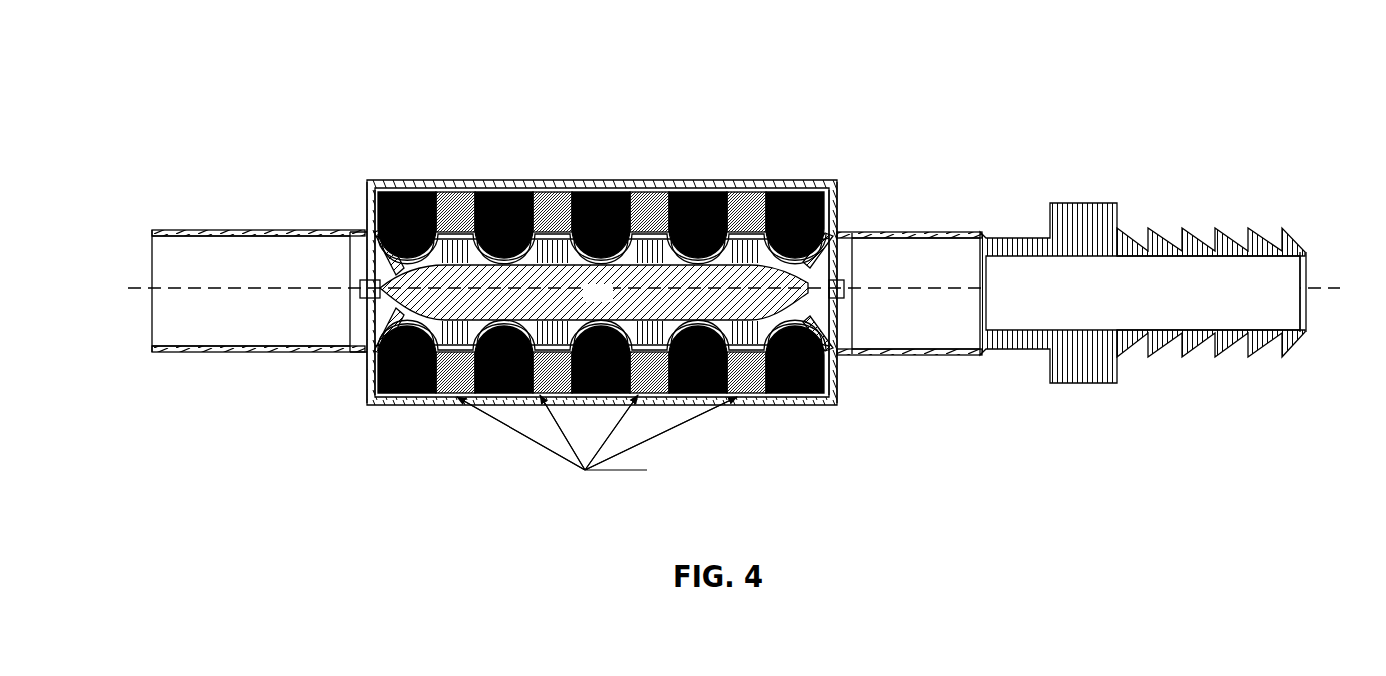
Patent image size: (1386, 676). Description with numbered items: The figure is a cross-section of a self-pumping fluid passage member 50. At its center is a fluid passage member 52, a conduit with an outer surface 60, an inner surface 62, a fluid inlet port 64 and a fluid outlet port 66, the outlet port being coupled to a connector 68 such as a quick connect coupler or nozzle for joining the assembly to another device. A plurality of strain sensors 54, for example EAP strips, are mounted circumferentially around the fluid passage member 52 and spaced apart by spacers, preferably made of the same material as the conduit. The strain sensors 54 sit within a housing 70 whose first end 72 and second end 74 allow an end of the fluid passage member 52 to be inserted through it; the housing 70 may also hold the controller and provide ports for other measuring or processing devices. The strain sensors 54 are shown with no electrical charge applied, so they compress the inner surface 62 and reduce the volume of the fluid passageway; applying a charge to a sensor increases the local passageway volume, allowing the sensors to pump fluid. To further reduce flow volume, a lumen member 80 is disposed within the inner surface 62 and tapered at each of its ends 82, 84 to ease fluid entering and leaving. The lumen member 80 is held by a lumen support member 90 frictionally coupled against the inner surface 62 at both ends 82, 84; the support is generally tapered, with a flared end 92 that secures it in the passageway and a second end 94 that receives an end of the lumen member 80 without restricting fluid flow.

The self-pumping fluid passage member 50 is at (663, 64).
The fluid passage member 52 is at (173, 354).
The strain sensors 54 is at (402, 189).
The outer surface 60 is at (945, 234).
The inner surface 62 is at (912, 351).
The fluid inlet port 64 is at (158, 267).
The fluid outlet port 66 is at (963, 263).
The connector 68 is at (1191, 244).
The housing 70 is at (393, 181).
The first end 72 is at (362, 369).
The second end 74 is at (840, 385).
The lumen member 80 is at (594, 292).
The end of lumen member 82 is at (376, 300).
The end of lumen member 84 is at (806, 298).
The lumen support member 90 is at (375, 236).
The flared end 92 is at (852, 236).
The second end 94 is at (822, 276).